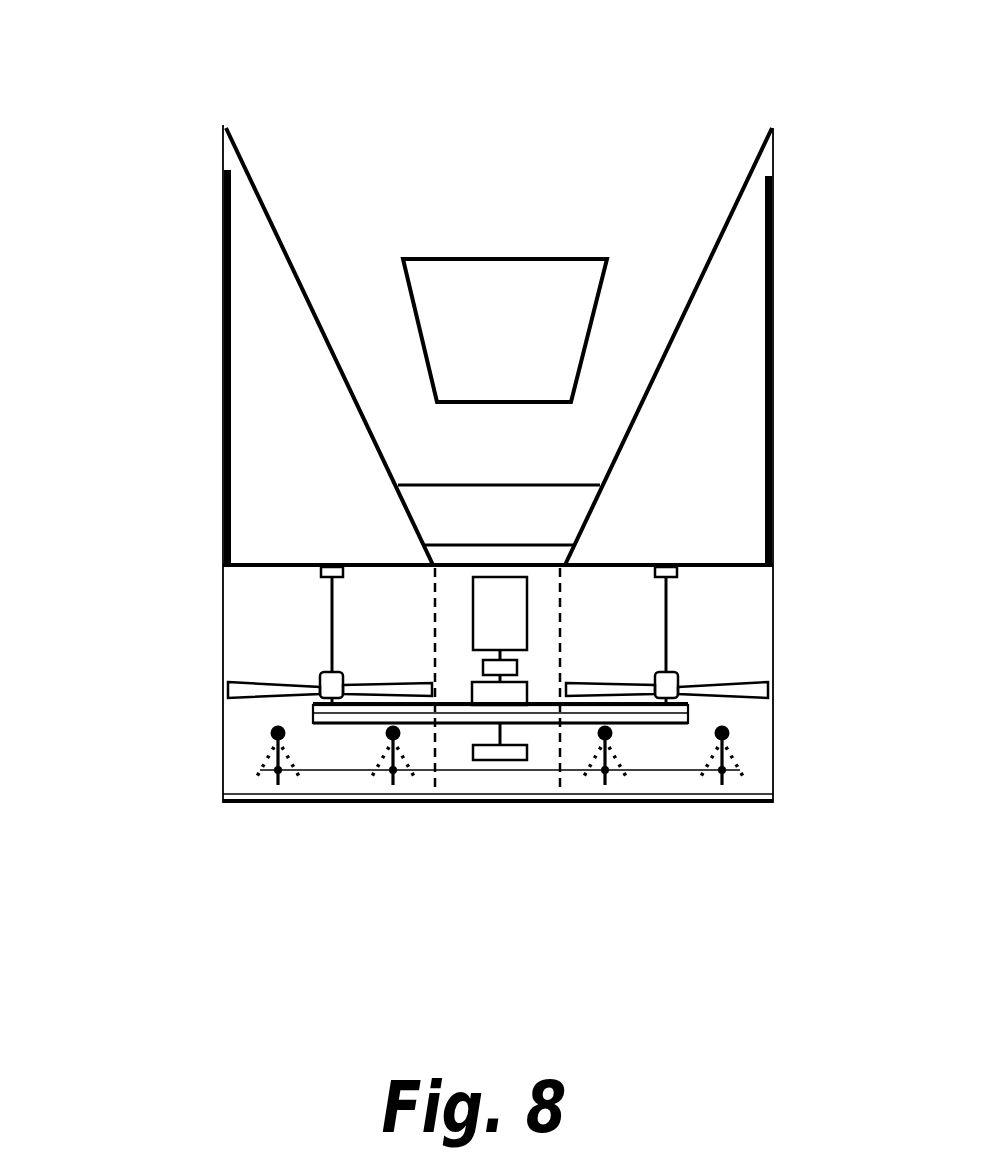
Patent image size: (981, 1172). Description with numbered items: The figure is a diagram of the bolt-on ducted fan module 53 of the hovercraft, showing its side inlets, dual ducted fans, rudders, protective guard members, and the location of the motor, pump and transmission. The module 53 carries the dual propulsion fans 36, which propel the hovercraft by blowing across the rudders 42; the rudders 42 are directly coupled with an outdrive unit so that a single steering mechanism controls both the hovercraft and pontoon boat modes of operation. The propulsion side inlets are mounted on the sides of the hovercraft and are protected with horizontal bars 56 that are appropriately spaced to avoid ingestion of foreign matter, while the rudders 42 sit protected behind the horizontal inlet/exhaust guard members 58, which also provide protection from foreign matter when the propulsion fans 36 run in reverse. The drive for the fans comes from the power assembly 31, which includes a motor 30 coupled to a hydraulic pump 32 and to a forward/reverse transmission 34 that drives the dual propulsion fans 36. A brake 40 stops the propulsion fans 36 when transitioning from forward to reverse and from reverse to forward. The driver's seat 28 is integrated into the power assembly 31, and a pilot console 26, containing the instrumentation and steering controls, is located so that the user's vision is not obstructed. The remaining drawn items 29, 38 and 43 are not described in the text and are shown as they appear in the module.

The pilot console 26 is at (467, 287).
The driver's seat 28 is at (438, 493).
The hopper side walls 29 is at (250, 418).
The motor 30 is at (503, 603).
The power assembly 31 is at (773, 656).
The hydraulic pump 32 is at (483, 668).
The forward/reverse transmission 34 is at (527, 690).
The propulsion fans 36 is at (320, 676).
The mounting plate 38 is at (318, 716).
The brake 40 is at (473, 758).
The rudders 42 is at (392, 784).
The spray pipe 43 is at (553, 771).
The ducted fan module 53 is at (729, 92).
The horizontal bars 56 is at (224, 330).
The horizontal inlet/exhaust guard members 58 is at (762, 803).